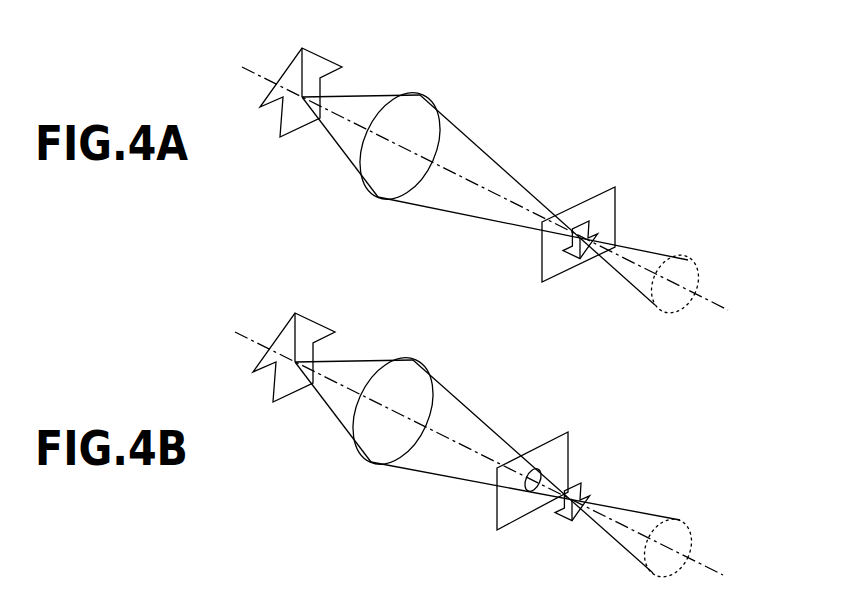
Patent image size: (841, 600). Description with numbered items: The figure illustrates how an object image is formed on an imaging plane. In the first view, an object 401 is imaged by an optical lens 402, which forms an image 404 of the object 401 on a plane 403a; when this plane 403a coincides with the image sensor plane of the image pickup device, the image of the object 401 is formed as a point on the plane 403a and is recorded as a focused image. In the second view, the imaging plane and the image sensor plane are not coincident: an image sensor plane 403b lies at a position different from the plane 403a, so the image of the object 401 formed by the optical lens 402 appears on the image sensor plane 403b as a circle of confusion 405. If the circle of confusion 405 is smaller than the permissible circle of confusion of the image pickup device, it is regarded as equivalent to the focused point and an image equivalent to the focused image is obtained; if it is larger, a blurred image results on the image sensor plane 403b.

In FIG. 4A, the object 401 is at (335, 65).
In FIG. 4B, the object 401 is at (317, 324).
In FIG. 4A, the optical lens 402 is at (418, 95).
In FIG. 4B, the optical lens 402 is at (413, 358).
In FIG. 4A, the plane 403a is at (615, 208).
In FIG. 4B, the image sensor plane 403b is at (569, 442).
In FIG. 4A, the image 404 is at (575, 222).
In FIG. 4B, the image 404 is at (582, 486).
In FIG. 4B, the circle of confusion 405 is at (534, 468).